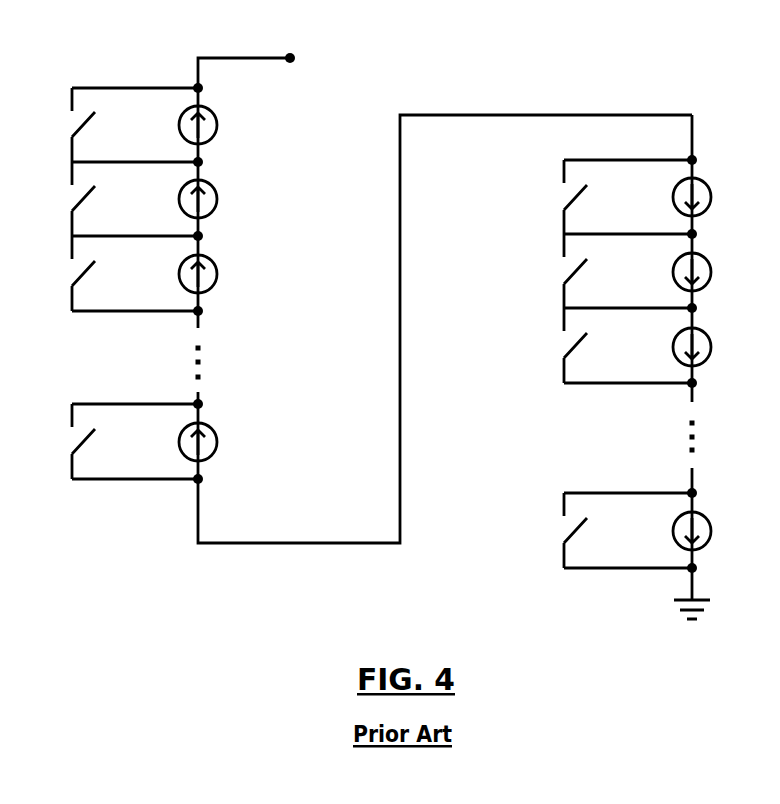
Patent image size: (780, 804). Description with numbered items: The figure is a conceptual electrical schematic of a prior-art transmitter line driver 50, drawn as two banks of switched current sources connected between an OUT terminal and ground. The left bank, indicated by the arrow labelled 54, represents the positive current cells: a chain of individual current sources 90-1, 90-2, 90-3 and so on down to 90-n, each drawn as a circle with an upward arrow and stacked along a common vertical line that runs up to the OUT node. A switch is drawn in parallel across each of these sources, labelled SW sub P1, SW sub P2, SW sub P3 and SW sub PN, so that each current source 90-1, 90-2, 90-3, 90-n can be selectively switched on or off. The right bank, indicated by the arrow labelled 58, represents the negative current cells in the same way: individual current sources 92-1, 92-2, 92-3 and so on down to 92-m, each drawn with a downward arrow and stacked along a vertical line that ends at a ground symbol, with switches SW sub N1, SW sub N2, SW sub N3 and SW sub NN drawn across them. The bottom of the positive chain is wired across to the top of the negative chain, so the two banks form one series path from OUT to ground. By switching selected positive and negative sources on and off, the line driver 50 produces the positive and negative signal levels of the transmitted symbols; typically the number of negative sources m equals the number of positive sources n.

The transmitter line driver 50 is at (548, 78).
The P-type current source bank 54 is at (302, 228).
The N-type current sink bank 58 is at (547, 245).
The current source 90-1 is at (217, 121).
The current source 90-2 is at (217, 195).
The current source 90-3 is at (217, 272).
The current source 90-n is at (217, 440).
The current source 92-1 is at (708, 208).
The current source 92-2 is at (708, 283).
The current source 92-3 is at (708, 358).
The current source 92-m is at (708, 542).